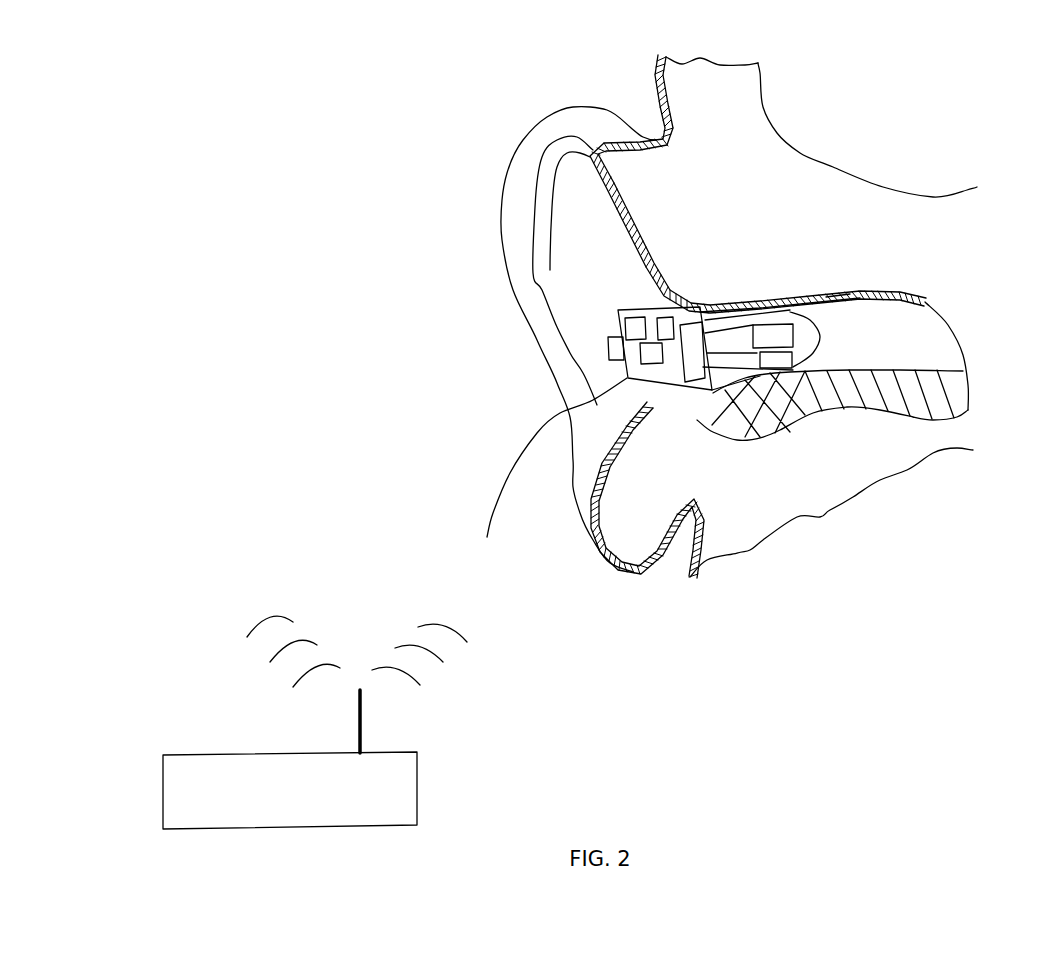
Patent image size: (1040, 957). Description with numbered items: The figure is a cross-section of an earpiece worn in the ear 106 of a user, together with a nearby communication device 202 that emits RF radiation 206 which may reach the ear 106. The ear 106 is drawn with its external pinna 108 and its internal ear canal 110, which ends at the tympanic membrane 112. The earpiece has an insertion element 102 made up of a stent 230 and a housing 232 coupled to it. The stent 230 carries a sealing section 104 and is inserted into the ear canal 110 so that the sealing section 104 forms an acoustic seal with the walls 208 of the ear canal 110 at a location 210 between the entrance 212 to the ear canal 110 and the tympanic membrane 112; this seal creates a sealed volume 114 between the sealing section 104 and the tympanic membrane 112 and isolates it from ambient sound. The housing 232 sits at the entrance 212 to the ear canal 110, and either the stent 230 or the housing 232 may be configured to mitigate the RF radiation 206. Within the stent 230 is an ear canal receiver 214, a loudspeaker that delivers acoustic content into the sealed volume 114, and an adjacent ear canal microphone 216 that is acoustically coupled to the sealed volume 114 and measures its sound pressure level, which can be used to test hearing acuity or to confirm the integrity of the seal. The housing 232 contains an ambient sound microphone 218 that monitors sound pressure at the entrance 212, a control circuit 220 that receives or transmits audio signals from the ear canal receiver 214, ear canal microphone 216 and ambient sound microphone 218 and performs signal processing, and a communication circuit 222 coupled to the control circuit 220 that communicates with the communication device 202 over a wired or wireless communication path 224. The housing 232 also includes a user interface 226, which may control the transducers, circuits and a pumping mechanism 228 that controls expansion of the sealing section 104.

The insertion element 102 is at (606, 315).
The sealing section 104 is at (740, 373).
The ear 106 is at (901, 124).
The pinna 108 is at (510, 153).
The ear canal 110 is at (908, 278).
The tympanic membrane 112 is at (953, 330).
The sealed volume 114 is at (853, 348).
The communication device 202 is at (418, 787).
The RF radiation 206 is at (443, 628).
The walls of ear canal 208 is at (838, 297).
The location 210 is at (713, 305).
The entrance to ear canal 212 is at (672, 276).
The ear canal receiver 214 is at (772, 330).
The ear canal microphone 216 is at (813, 400).
The ambient sound microphone 218 is at (645, 357).
The control circuit 220 is at (700, 362).
The communication circuit 222 is at (617, 325).
The communication path 224 is at (533, 437).
The user interface 226 is at (613, 348).
The pumping mechanism 228 is at (600, 220).
The stent 230 is at (813, 297).
The housing 232 is at (623, 310).